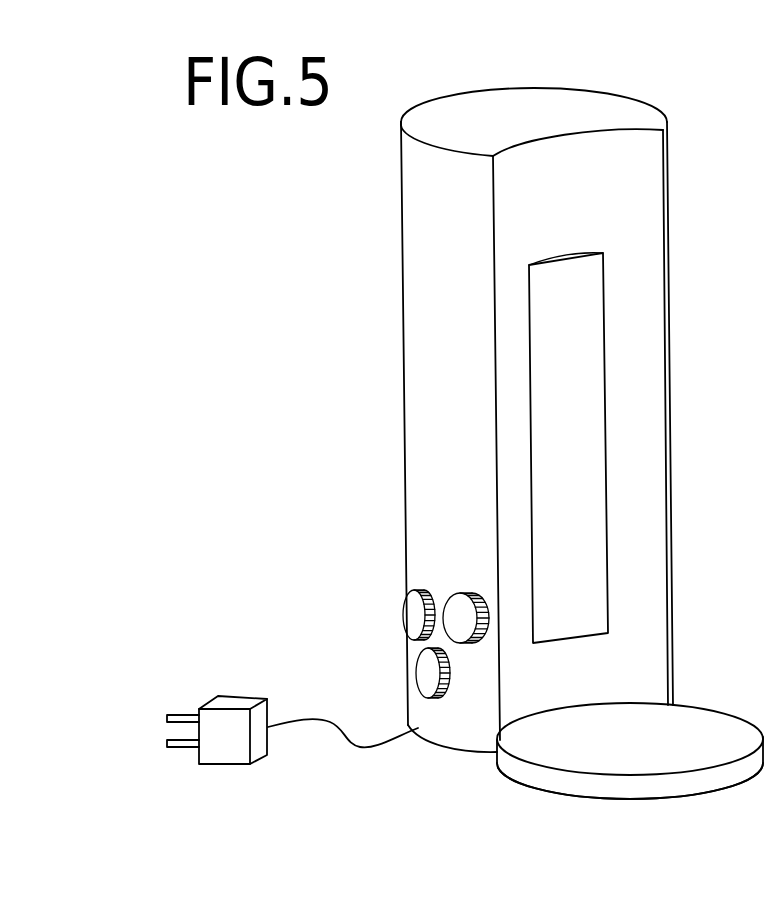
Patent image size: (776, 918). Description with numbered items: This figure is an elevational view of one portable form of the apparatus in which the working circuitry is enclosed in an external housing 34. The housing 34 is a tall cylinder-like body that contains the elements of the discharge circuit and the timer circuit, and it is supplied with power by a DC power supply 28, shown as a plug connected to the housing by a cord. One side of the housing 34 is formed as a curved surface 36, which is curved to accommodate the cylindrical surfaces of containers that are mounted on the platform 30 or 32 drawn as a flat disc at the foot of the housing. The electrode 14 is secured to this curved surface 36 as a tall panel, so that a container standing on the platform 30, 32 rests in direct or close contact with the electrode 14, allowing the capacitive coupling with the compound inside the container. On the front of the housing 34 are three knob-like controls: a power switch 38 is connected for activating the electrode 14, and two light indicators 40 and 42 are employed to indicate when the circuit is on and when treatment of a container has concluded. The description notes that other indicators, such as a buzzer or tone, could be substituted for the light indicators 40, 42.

The electrode 14 is at (590, 378).
The DC power supply 28 is at (238, 696).
The platform 30 is at (733, 725).
The platform 32 is at (630, 781).
The housing 34 is at (404, 172).
The curved surface 36 is at (613, 185).
The power switch 38 is at (457, 592).
The light indicator 40 is at (410, 613).
The light indicator 42 is at (425, 672).